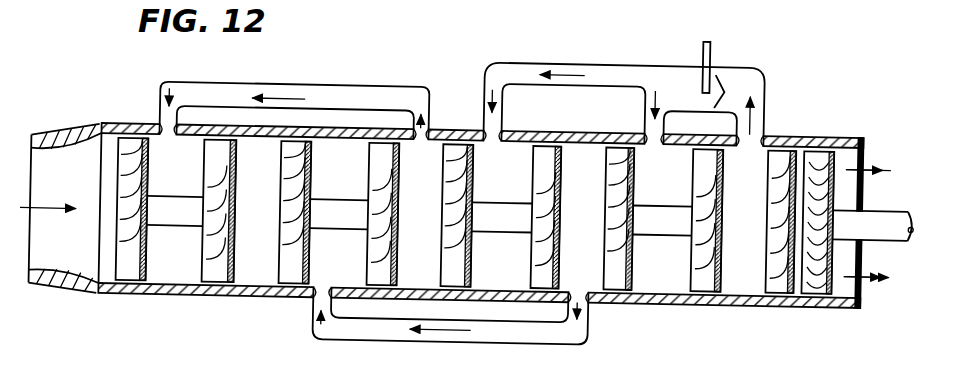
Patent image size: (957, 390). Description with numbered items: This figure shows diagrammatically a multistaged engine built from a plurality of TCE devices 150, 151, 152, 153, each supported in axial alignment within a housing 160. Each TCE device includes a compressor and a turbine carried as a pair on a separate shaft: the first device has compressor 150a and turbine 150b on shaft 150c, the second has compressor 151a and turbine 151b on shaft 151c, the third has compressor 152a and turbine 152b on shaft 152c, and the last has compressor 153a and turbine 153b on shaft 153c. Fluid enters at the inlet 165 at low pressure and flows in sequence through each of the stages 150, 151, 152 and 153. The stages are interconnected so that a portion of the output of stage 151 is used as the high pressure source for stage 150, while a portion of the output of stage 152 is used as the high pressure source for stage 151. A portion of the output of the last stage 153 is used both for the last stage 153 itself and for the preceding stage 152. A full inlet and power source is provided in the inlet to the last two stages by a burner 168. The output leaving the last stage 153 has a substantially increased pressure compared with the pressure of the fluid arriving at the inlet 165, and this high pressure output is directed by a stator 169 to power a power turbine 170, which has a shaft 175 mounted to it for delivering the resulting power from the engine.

The TCE device 150 is at (164, 221).
The compressor 150a is at (135, 137).
The turbine 150b is at (218, 290).
The shaft 150c is at (168, 199).
The TCE device 151 is at (328, 214).
The compressor 151a is at (292, 144).
The turbine 151b is at (382, 275).
The shaft 151c is at (333, 201).
The TCE device 152 is at (503, 216).
The compressor 152a is at (453, 145).
The turbine 152b is at (547, 273).
The shaft 152c is at (497, 199).
The TCE device 153 is at (651, 234).
The compressor 153a is at (620, 140).
The turbine 153b is at (705, 270).
The shaft 153c is at (658, 199).
The housing 160 is at (202, 128).
The inlet 165 is at (43, 244).
The burner 168 is at (708, 58).
The stator 169 is at (778, 146).
The power turbine 170 is at (818, 143).
The shaft 175 is at (872, 207).